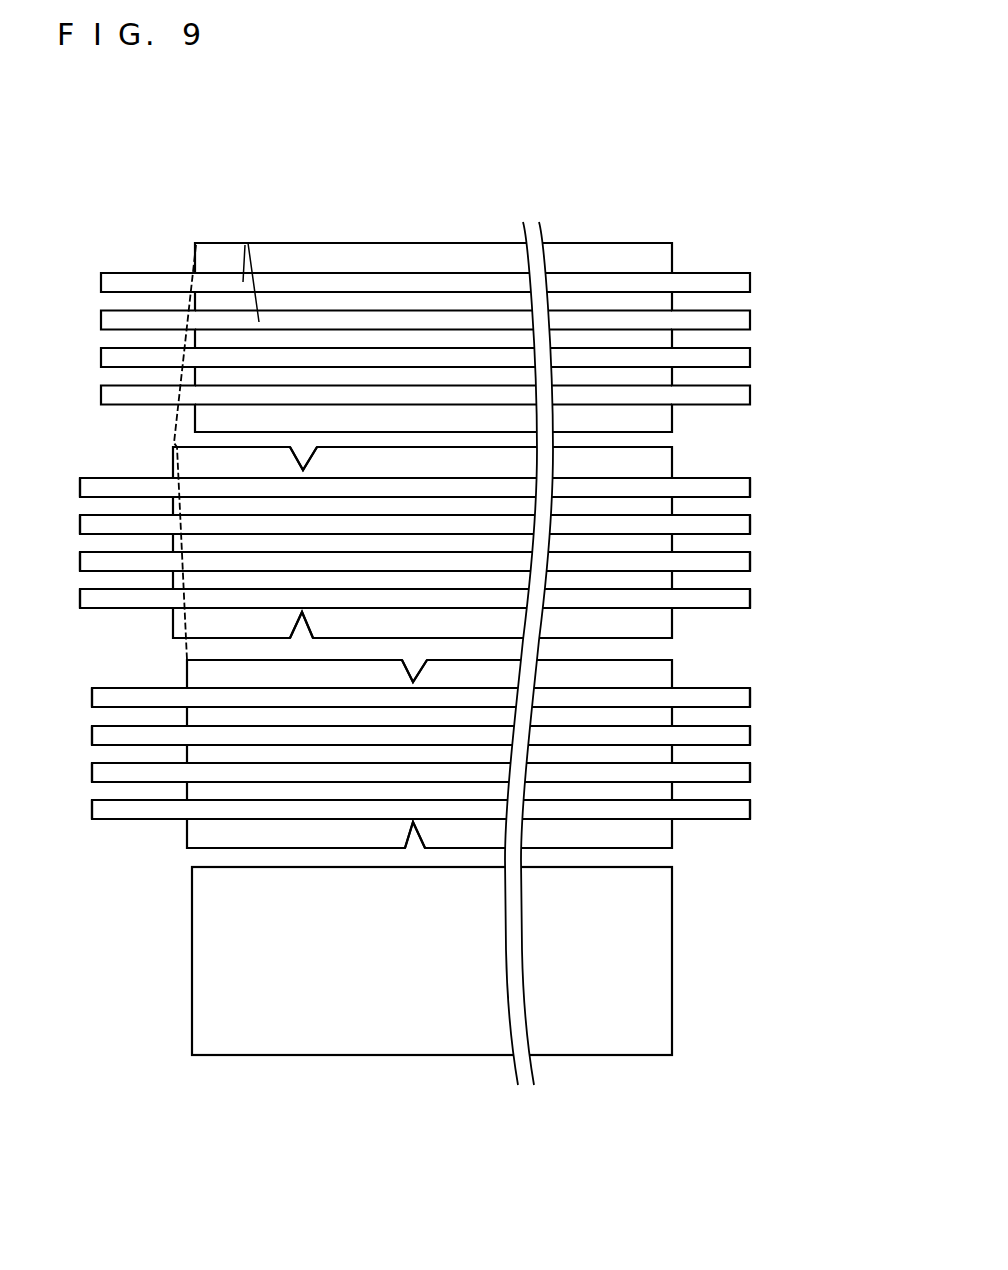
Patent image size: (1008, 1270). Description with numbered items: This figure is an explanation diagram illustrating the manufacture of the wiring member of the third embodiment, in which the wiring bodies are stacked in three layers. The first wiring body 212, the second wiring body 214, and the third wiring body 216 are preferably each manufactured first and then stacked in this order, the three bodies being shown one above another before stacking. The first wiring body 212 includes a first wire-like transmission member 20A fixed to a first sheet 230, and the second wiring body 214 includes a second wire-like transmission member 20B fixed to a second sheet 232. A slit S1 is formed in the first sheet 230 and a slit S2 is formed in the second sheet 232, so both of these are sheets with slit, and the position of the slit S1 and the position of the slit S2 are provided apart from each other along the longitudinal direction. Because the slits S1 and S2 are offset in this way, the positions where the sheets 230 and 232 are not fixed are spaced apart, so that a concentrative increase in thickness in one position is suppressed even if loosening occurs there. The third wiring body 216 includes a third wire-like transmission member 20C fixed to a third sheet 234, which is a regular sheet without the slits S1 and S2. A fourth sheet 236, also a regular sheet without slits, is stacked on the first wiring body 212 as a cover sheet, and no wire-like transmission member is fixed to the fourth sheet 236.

The third wiring body 216 is at (425, 400).
The third wire-like transmission member 20C is at (338, 182).
The third sheet 234 is at (313, 243).
The second wiring body 214 is at (471, 541).
The second sheet 232 is at (660, 462).
The second wire-like transmission member 20B is at (749, 526).
The first wiring body 212 is at (479, 751).
The first sheet 230 is at (658, 678).
The first wire-like transmission member 20A is at (750, 735).
The fourth sheet 236 is at (303, 1043).
The slit S1 is at (415, 832).
The slit S2 is at (347, 622).